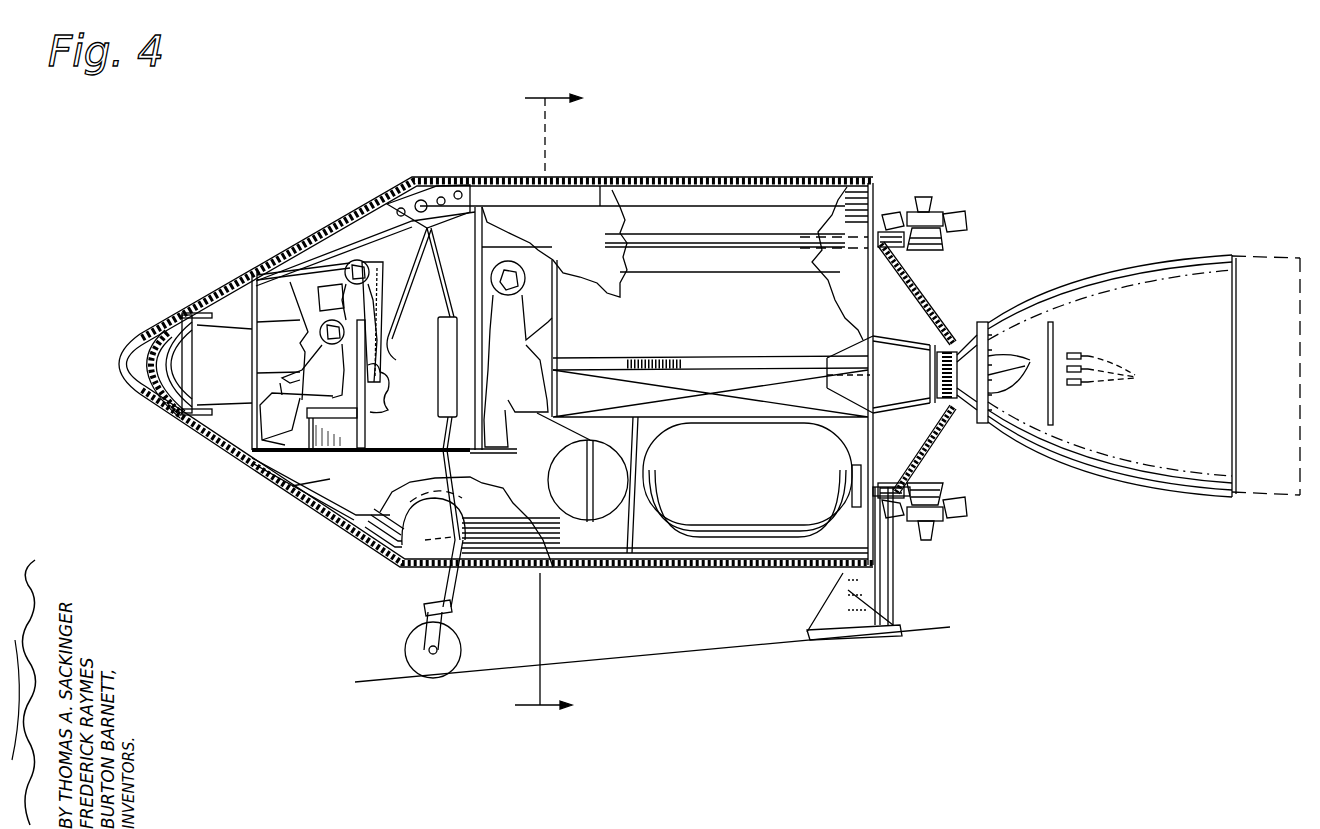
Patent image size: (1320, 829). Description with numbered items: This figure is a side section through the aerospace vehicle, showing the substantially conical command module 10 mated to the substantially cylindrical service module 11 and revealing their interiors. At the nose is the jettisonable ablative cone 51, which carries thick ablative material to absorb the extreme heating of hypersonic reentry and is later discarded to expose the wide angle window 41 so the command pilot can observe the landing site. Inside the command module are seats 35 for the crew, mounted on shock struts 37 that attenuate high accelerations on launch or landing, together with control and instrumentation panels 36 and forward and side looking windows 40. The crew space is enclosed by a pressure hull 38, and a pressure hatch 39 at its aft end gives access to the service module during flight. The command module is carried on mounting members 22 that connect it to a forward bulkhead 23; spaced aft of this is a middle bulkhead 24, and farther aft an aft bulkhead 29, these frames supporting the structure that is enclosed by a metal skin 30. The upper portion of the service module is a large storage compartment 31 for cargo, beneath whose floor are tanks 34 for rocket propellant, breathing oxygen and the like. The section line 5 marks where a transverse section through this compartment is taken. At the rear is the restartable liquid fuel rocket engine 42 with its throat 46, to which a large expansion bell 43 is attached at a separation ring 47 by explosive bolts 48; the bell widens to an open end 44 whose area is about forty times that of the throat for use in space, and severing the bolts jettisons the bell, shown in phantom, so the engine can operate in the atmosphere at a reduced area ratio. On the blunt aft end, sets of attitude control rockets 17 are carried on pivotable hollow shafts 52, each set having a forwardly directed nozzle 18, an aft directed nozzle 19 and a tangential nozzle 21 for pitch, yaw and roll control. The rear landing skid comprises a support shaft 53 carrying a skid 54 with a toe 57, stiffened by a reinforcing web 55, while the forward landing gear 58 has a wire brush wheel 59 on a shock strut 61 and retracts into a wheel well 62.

The section line 5- 5 is at (559, 403).
The command module 10 is at (254, 480).
The service module 11 is at (748, 182).
The attitude control rockets 17 is at (955, 208).
The forwardly directed nozzle 18 is at (898, 210).
The rearwardly directed nozzle 19 is at (967, 222).
The tangential nozzle 21 is at (930, 198).
The mounting members 22 is at (432, 222).
The forward bulkhead 23 is at (452, 300).
The middle bulkhead 24 is at (570, 290).
The aft bulkhead 29 is at (828, 352).
The metal skin 30 is at (640, 182).
The storage compartment 31 is at (715, 336).
The tanks 34 is at (605, 515).
The seats 35 is at (370, 400).
The control and instrumentation panels 36 is at (305, 338).
The shock struts 37 is at (345, 270).
The pressure hull 38 is at (430, 330).
The pressure hatch 39 is at (438, 375).
The forward and side looking windows 40 is at (312, 232).
The wide angle window 41 is at (170, 325).
The rocket engine 42 is at (888, 352).
The expansion bell 43 is at (1110, 280).
The open end of the bell 44 is at (1238, 487).
The throat 46 is at (950, 400).
The separation ring 47 is at (990, 322).
The explosive bolts 48 is at (1028, 368).
The jettisonable ablative cone 51 is at (128, 372).
The pivotable hollow shafts 52 is at (912, 262).
The support shaft 53 is at (895, 574).
The skid 54 is at (885, 637).
The reinforcing web 55 is at (830, 596).
The toe of the skid 57 is at (795, 650).
The forward landing gear 58 is at (455, 610).
The wire brush wheel 59 is at (465, 650).
The shock strut 61 is at (465, 560).
The wheel well 62 is at (410, 570).